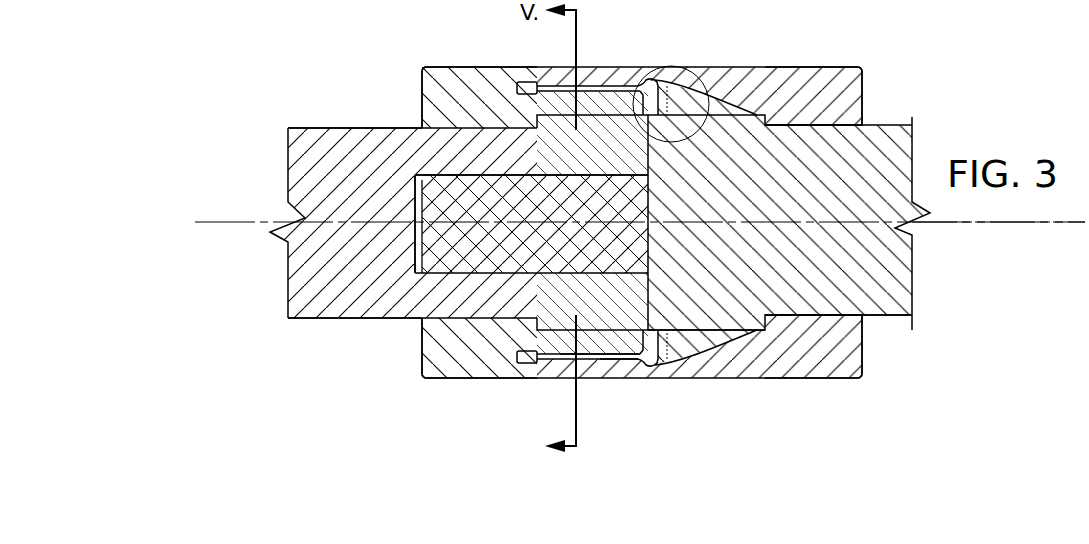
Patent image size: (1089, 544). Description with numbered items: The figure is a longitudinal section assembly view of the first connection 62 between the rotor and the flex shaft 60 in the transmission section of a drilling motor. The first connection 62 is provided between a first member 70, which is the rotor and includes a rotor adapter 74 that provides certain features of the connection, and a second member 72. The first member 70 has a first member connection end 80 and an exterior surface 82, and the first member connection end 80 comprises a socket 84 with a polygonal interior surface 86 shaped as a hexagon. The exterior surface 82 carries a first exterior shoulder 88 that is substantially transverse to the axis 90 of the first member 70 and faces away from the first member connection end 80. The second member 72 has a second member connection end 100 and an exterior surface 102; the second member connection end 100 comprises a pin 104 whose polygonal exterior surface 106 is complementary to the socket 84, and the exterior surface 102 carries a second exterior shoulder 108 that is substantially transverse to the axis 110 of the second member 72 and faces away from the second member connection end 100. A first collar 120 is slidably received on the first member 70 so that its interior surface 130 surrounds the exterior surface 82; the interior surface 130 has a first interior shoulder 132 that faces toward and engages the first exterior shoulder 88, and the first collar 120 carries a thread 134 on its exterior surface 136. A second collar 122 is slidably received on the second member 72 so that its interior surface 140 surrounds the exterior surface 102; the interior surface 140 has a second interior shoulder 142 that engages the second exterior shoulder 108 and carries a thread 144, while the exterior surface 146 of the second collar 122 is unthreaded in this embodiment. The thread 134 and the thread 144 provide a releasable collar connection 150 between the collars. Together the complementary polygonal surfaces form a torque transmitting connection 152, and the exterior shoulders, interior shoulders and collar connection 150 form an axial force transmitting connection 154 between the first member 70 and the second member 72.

The flex shaft 60 is at (893, 135).
The first connection 62 is at (700, 428).
The first member 70 is at (318, 305).
The second member 72 is at (895, 288).
The rotor adapter 74 is at (308, 135).
The first member connection end 80 is at (690, 72).
The exterior surface 82 is at (407, 318).
The socket 84 is at (437, 170).
The polygonal interior surface 86 is at (418, 170).
The first exterior shoulder 88 is at (530, 365).
The axis 90 is at (213, 223).
The second member connection end 100 is at (425, 277).
The exterior surface 102 is at (875, 322).
The pin 104 is at (502, 187).
The polygonal exterior surface 106 is at (572, 173).
The second exterior shoulder 108 is at (772, 322).
The axis 110 is at (1027, 223).
The first collar 120 is at (487, 353).
The second collar 122 is at (813, 355).
The interior surface 130 is at (558, 335).
The first interior shoulder 132 is at (535, 84).
The thread 134 is at (598, 88).
The exterior surface 136 is at (613, 362).
The interior surface 140 is at (645, 365).
The second interior shoulder 142 is at (763, 112).
The thread 144 is at (628, 88).
The exterior surface 146 is at (690, 382).
The collar connection 150 is at (593, 335).
The torque transmitting connection 152 is at (470, 170).
The axial force transmitting connection 154 is at (583, 430).